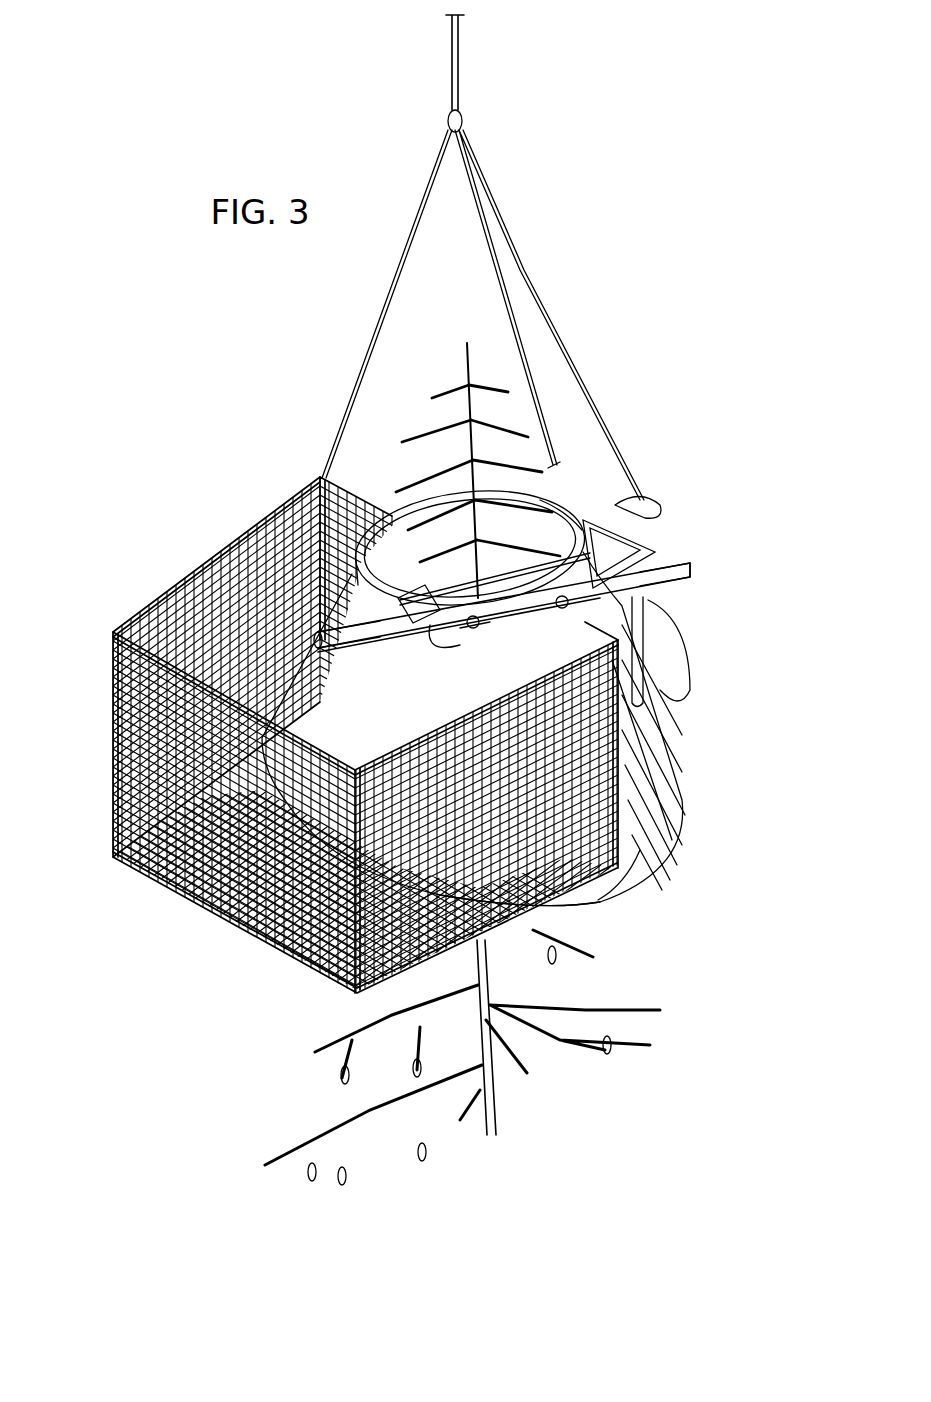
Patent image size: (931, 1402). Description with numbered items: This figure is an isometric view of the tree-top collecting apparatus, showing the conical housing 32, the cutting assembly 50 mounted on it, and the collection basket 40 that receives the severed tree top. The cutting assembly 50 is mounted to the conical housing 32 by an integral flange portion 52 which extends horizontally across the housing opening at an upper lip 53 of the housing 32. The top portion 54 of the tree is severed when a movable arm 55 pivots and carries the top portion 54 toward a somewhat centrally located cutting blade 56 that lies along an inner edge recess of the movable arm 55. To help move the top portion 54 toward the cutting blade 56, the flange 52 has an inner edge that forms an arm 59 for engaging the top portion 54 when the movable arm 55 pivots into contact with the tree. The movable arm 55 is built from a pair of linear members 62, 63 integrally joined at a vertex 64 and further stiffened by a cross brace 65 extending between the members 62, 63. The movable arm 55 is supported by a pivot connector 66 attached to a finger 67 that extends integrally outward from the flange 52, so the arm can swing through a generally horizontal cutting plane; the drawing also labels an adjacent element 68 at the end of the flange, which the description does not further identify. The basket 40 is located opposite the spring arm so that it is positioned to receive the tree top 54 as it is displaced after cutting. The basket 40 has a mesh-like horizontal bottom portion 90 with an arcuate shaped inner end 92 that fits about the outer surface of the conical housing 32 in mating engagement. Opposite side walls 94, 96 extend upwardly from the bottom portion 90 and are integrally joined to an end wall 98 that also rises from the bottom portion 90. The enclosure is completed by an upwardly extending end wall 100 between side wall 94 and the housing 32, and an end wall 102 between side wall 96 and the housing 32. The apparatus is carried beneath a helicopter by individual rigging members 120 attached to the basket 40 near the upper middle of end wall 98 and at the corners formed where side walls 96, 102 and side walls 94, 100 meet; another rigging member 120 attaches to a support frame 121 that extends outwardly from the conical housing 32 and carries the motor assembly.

The conical housing 32 is at (665, 752).
The basket 40 is at (109, 836).
The cutting assembly 50 is at (672, 557).
The flange portion 52 is at (378, 495).
The upper lip 53 is at (385, 513).
The top portion 54 is at (462, 378).
The movable arm 55 is at (656, 522).
The cutting blade 56 is at (561, 628).
The arm 59 is at (397, 602).
The linear member 62 is at (490, 640).
The linear member 63 is at (560, 492).
The vertex 64 is at (691, 571).
The cross brace 65 is at (660, 542).
The pivot connector 66 is at (460, 632).
The finger 67 is at (444, 636).
The tube end 68 is at (352, 640).
The bottom portion 90 is at (282, 960).
The inner end 92 is at (556, 900).
The side wall 94 is at (626, 866).
The side wall 96 is at (206, 597).
The end wall 98 is at (216, 924).
The end wall 100 is at (572, 646).
The end wall 102 is at (355, 500).
The rigging member 120 is at (490, 237).
The support frame 121 is at (662, 504).